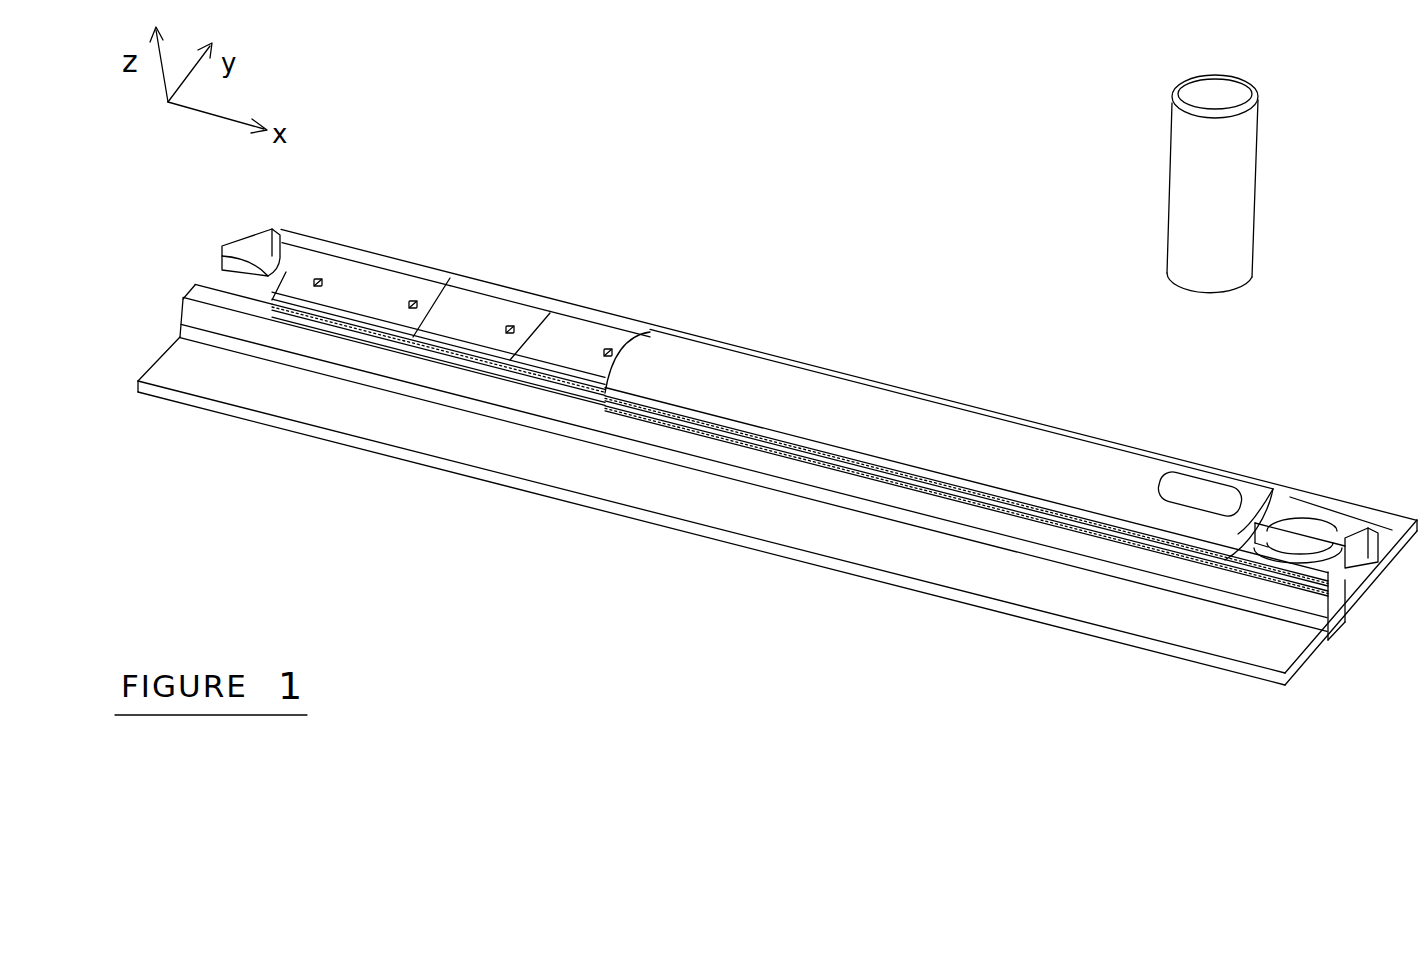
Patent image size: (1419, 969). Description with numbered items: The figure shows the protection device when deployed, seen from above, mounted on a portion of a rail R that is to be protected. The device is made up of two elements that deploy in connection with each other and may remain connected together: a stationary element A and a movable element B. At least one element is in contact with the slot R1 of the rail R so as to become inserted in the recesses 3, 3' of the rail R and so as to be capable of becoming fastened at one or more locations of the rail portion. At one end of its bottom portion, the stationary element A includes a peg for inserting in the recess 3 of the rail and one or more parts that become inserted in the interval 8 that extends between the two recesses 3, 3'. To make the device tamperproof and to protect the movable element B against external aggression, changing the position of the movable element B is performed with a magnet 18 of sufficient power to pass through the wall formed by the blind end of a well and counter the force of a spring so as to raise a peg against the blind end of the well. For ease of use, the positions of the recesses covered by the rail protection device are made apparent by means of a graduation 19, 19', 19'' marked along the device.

The interval 8 is at (285, 276).
The graduation 19 is at (450, 235).
The graduation 19' is at (595, 258).
The graduation 19'' is at (711, 294).
The movable element B is at (745, 378).
The stationary element A is at (570, 352).
The rail R is at (1108, 551).
The recess 3 is at (1323, 463).
The recess 3' is at (274, 387).
The slot R1 is at (1347, 560).
The magnet 18 is at (1196, 228).